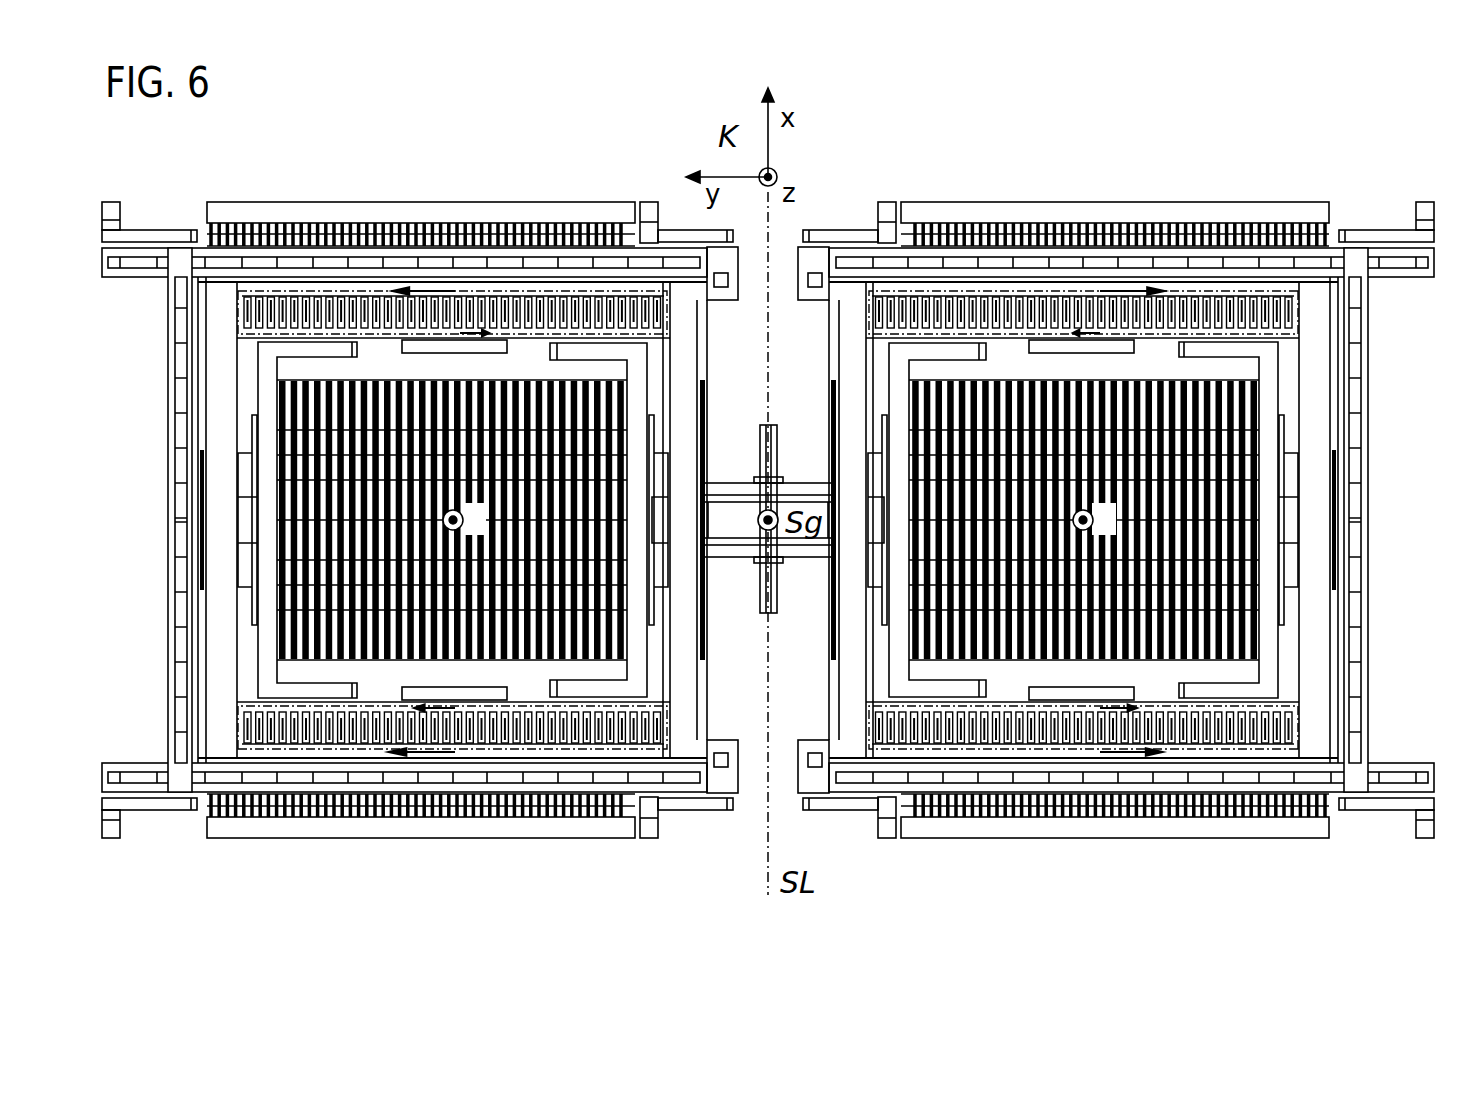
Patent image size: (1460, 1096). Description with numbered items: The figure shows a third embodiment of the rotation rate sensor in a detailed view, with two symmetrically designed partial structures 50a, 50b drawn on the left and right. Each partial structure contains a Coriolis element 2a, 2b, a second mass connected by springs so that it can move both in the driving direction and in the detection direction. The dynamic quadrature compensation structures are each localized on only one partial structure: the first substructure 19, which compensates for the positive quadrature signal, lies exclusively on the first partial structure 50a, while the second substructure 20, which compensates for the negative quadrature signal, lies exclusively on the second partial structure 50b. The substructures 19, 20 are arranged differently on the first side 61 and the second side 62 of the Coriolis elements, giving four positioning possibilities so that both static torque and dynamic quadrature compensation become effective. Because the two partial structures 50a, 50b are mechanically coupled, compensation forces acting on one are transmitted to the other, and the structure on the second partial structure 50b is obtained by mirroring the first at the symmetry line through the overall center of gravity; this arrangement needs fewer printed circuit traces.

The first partial structure 50a is at (419, 503).
The second partial structure 50b is at (1117, 503).
The first substructure 19 is at (343, 300).
The second substructure 20 is at (1050, 300).
The first side 61 is at (768, 328).
The second side 62 is at (768, 711).
The Coriolis element 2a is at (272, 400).
The Coriolis element 2b is at (1265, 410).